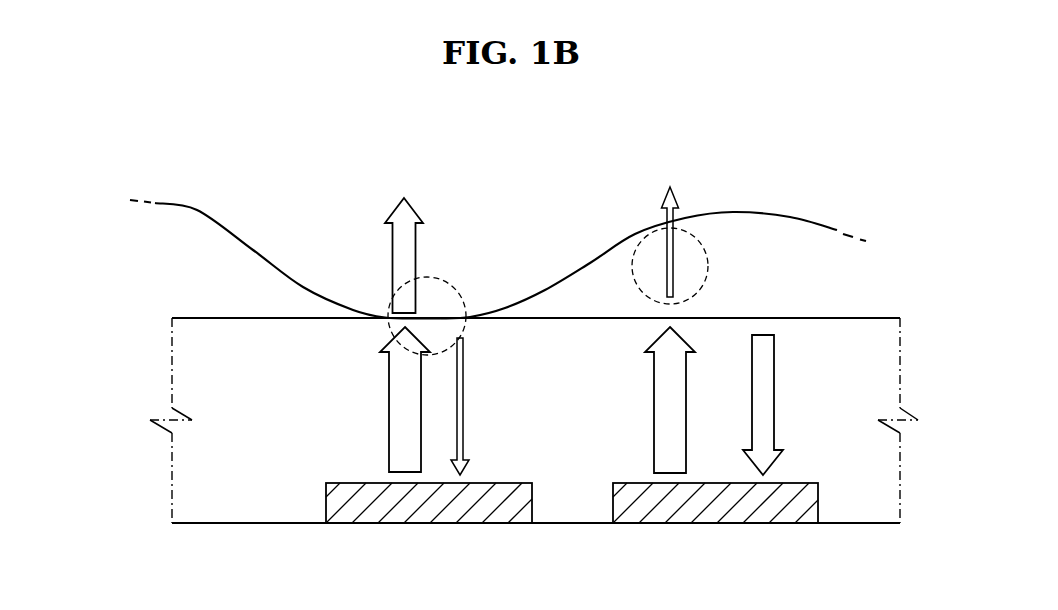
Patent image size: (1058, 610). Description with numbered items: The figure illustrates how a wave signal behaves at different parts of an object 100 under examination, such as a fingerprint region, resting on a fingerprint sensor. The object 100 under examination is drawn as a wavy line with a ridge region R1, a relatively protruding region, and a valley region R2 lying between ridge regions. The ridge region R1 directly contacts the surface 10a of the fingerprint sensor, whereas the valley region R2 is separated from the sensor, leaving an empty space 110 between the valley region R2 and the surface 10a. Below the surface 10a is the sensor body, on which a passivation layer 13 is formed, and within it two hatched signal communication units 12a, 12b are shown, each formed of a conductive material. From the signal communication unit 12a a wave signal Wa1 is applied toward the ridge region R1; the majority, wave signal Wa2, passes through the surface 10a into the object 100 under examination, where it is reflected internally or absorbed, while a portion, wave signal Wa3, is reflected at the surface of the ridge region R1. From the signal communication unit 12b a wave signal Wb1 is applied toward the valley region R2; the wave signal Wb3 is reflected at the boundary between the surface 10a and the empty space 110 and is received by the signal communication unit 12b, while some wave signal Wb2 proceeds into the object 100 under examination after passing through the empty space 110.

The object under examination 100 is at (198, 208).
The empty space 110 is at (765, 233).
The surface of the fingerprint sensor 10a is at (220, 318).
The passivation layer 13 is at (183, 460).
The signal communication unit 12a is at (438, 517).
The signal communication unit 12b is at (725, 515).
The ridge region R1 is at (450, 285).
The valley region R2 is at (638, 243).
The wave signal Wa1 is at (382, 399).
The wave signal Wa2 is at (382, 255).
The wave signal Wa3 is at (482, 406).
The wave signal Wb1 is at (648, 400).
The wave signal Wb2 is at (693, 239).
The wave signal Wb3 is at (785, 405).